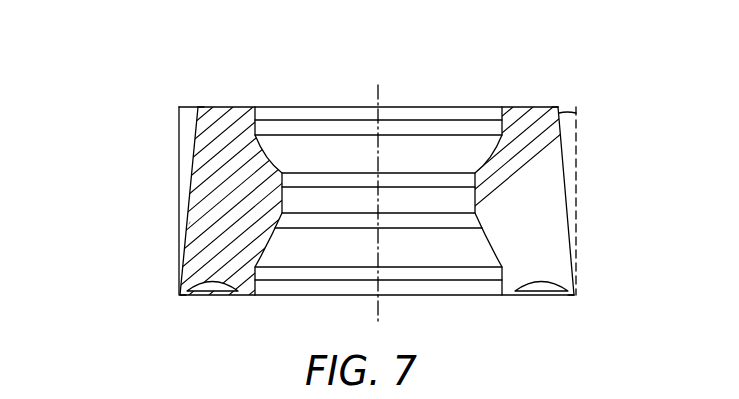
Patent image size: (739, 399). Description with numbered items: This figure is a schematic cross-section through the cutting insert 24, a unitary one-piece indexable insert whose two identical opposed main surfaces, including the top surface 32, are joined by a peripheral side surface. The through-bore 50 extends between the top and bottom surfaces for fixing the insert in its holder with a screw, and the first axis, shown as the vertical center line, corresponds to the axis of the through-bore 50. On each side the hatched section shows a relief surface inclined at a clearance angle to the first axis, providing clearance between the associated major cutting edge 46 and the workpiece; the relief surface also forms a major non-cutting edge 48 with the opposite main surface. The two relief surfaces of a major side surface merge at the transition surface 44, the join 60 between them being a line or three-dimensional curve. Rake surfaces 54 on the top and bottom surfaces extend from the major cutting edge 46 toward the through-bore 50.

The cutting insert 24 is at (310, 199).
The top surface 32 is at (230, 100).
The transition surface 44 is at (170, 189).
The major cutting edge 46 is at (182, 296).
The major non-cutting edge 48 is at (200, 107).
The through-bore 50 is at (320, 107).
The rake surface 54 is at (212, 296).
The join 60 is at (190, 222).